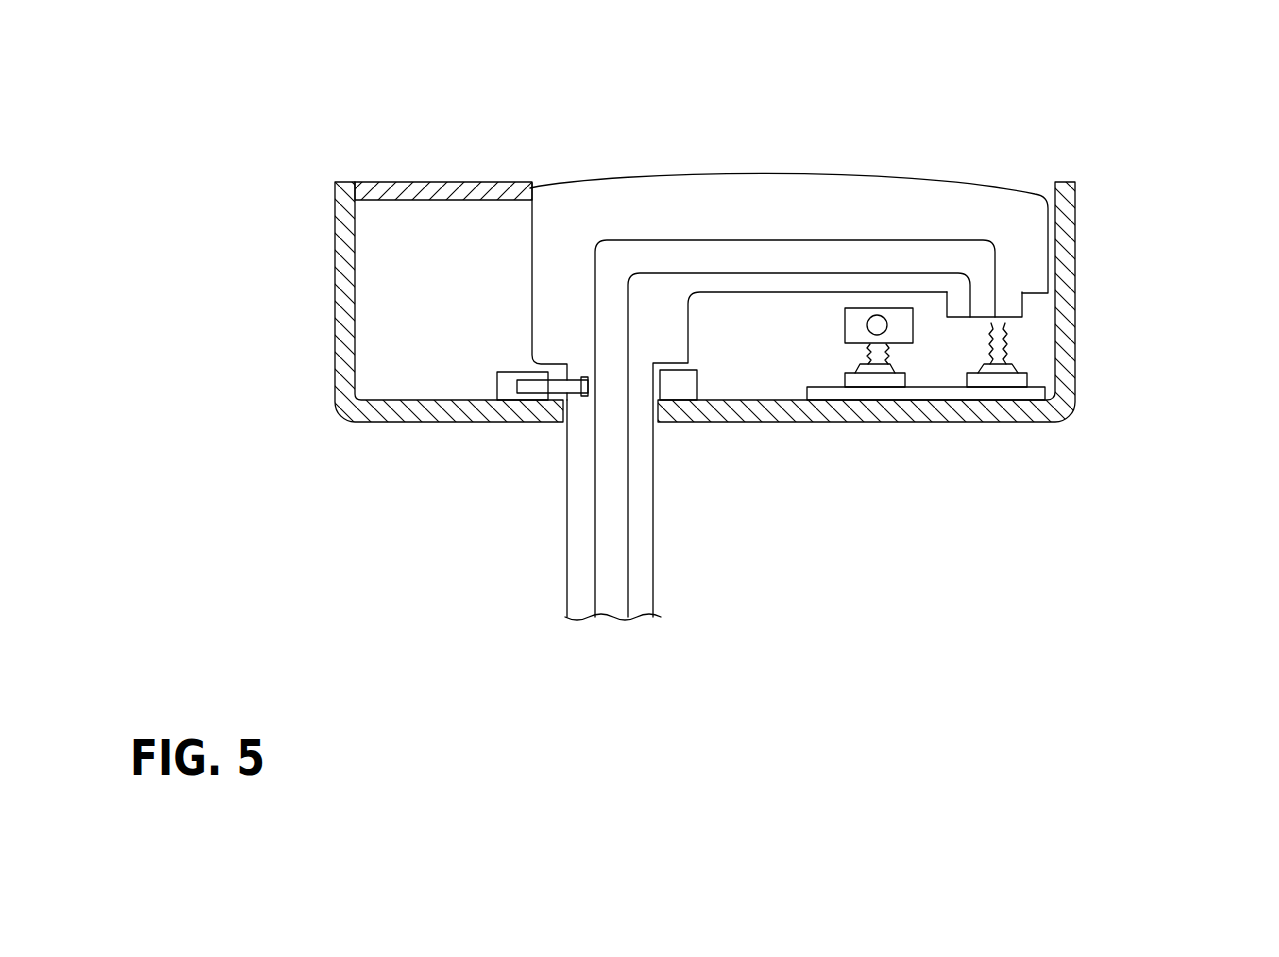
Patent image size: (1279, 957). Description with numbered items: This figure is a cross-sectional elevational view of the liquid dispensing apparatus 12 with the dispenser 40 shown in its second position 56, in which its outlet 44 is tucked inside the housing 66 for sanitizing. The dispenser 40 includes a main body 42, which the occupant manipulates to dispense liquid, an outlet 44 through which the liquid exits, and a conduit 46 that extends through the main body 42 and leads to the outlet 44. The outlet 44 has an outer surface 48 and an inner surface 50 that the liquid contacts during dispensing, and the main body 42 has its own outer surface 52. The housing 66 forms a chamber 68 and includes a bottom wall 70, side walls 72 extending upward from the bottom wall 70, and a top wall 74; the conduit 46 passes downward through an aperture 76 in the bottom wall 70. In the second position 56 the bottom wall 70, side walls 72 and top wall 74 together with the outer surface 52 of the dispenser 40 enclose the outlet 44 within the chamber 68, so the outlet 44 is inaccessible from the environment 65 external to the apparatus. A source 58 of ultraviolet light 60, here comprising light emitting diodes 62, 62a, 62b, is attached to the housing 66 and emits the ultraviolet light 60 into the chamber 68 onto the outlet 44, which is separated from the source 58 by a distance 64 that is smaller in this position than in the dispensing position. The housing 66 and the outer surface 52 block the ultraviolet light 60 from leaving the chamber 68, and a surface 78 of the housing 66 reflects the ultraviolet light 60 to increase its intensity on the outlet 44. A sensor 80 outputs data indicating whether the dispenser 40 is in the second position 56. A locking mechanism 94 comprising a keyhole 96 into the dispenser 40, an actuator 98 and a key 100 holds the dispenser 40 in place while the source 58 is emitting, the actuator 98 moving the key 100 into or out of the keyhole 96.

The liquid dispensing apparatus 12 is at (238, 158).
The dispenser 40 is at (670, 176).
The main body 42 is at (775, 215).
The outlet 44 is at (980, 320).
The conduit 46 is at (627, 573).
The outer surface 48 is at (1022, 305).
The inner surface 50 is at (993, 300).
The outer surface 52 is at (852, 175).
The second position 56 is at (915, 153).
The source of ultraviolet light 58 is at (997, 382).
The ultraviolet light 60 is at (1013, 342).
The light emitting diode 62 is at (998, 368).
The light emitting diode 62a is at (876, 330).
The light emitting diode 62b is at (873, 377).
The distance 64 is at (1030, 317).
The environment 65 is at (419, 148).
The housing 66 is at (337, 228).
The chamber 68 is at (440, 316).
The bottom wall 70 is at (422, 412).
The side walls 72 is at (397, 222).
The top wall 74 is at (485, 182).
The aperture 76 is at (570, 413).
The surface 78 is at (748, 398).
The sensor 80 is at (678, 390).
The locking mechanism 94 is at (498, 387).
The keyhole 96 is at (568, 365).
The actuator 98 is at (510, 393).
The key 100 is at (533, 388).